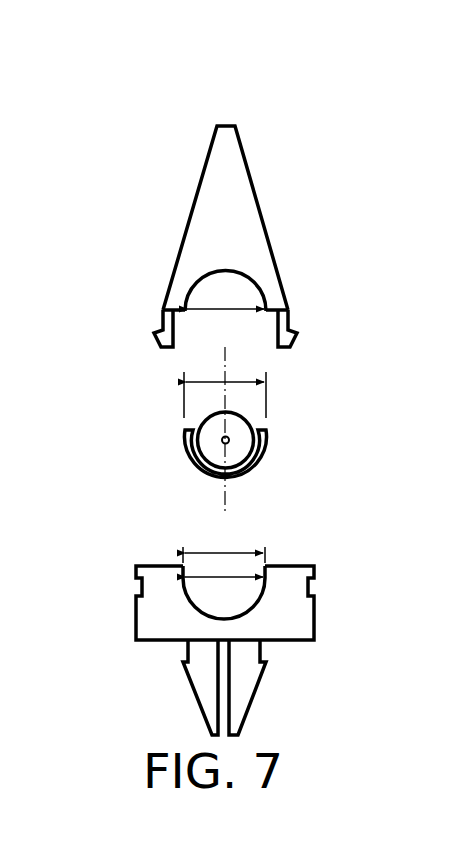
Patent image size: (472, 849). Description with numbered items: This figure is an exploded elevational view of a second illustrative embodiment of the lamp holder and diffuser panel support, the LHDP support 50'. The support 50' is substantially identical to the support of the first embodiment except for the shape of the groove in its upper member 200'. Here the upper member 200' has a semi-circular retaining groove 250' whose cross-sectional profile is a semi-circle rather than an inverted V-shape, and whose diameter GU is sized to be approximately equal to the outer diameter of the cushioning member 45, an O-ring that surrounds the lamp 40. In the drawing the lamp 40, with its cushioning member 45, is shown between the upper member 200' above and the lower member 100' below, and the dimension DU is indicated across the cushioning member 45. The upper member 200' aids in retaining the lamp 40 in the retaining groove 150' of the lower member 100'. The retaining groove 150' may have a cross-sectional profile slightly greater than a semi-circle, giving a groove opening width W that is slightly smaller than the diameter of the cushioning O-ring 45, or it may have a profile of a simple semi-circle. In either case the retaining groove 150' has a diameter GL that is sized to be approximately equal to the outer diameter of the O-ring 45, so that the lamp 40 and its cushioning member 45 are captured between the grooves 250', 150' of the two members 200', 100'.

The LHDP support 50' is at (225, 166).
The upper member 200' is at (179, 248).
The semi-circular retaining groove 250' is at (293, 286).
The lamp 40 is at (238, 419).
The cushioning member 45 is at (260, 448).
The lower member 100' is at (291, 650).
The retaining groove 150' is at (286, 602).
The diameter of upper retaining groove GU is at (225, 310).
The upper diameter DU is at (225, 381).
The groove opening width W is at (224, 544).
The diameter of lower retaining groove GL is at (220, 577).